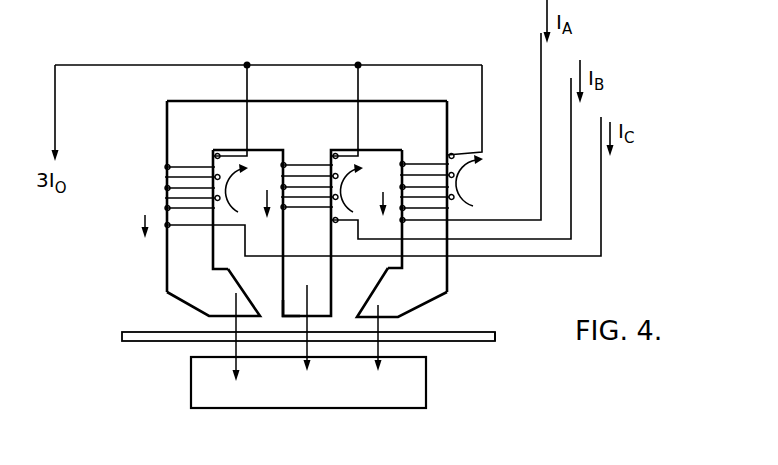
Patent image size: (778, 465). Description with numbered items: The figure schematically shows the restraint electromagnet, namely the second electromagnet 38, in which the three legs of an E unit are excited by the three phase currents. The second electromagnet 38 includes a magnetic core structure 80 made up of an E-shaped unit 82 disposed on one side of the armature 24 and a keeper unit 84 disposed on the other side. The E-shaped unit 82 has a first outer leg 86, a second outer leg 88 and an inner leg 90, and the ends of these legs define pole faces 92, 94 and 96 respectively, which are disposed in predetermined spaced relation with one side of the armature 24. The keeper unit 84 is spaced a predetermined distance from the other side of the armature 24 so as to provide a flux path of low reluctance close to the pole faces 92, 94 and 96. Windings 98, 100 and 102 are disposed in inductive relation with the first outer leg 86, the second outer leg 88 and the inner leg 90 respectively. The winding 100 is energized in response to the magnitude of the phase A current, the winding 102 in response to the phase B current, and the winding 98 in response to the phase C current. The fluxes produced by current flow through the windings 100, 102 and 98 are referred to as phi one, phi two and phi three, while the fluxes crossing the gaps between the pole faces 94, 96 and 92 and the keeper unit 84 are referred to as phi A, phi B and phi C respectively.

The armature 24 is at (459, 341).
The second electromagnet 38 is at (525, 297).
The magnetic core structure 80 is at (167, 283).
The E-shaped unit 82 is at (167, 101).
The keeper unit 84 is at (191, 402).
The first outer leg 86 is at (167, 253).
The second outer leg 88 is at (447, 272).
The inner leg 90 is at (331, 272).
The pole face 92 is at (226, 316).
The pole face 94 is at (388, 318).
The pole face 96 is at (292, 317).
The winding 98 is at (167, 165).
The winding 100 is at (418, 164).
The winding 102 is at (297, 164).